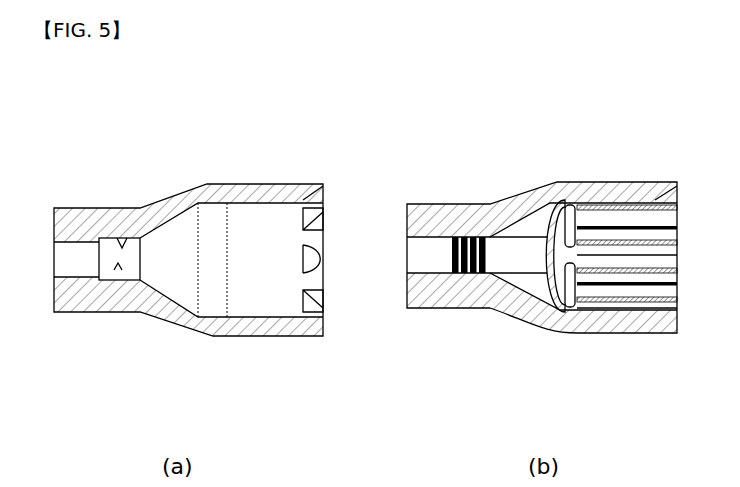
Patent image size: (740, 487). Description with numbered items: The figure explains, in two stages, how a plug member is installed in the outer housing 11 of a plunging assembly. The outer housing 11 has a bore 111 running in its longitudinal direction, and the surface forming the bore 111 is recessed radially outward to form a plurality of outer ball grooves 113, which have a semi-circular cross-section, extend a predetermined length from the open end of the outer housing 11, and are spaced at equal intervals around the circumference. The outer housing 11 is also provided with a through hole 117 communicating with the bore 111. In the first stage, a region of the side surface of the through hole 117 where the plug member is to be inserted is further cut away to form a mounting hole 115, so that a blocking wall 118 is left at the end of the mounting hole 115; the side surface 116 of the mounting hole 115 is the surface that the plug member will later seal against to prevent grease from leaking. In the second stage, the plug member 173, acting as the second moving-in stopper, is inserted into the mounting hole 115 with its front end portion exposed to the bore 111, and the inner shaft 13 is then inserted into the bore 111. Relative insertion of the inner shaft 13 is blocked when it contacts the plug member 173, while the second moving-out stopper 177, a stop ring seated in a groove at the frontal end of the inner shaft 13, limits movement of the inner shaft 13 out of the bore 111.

The outer housing 11 is at (247, 195).
The bore 111 is at (253, 272).
The outer ball groove 113 is at (323, 327).
The mounting hole 115 is at (118, 268).
The side surface of the mounting hole 116 is at (133, 247).
The through hole 117 is at (73, 260).
The blocking wall 118 is at (95, 224).
The inner shaft 13 is at (672, 322).
The plug member 173 is at (525, 255).
The second moving-out stopper 177 is at (583, 296).